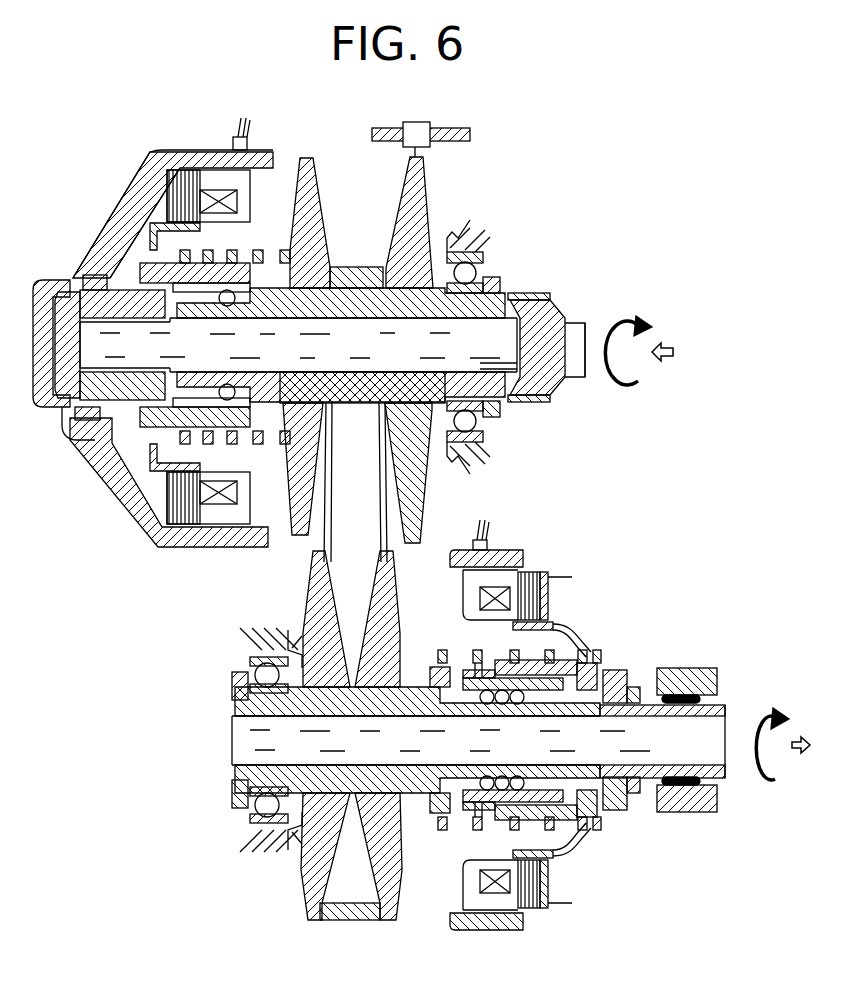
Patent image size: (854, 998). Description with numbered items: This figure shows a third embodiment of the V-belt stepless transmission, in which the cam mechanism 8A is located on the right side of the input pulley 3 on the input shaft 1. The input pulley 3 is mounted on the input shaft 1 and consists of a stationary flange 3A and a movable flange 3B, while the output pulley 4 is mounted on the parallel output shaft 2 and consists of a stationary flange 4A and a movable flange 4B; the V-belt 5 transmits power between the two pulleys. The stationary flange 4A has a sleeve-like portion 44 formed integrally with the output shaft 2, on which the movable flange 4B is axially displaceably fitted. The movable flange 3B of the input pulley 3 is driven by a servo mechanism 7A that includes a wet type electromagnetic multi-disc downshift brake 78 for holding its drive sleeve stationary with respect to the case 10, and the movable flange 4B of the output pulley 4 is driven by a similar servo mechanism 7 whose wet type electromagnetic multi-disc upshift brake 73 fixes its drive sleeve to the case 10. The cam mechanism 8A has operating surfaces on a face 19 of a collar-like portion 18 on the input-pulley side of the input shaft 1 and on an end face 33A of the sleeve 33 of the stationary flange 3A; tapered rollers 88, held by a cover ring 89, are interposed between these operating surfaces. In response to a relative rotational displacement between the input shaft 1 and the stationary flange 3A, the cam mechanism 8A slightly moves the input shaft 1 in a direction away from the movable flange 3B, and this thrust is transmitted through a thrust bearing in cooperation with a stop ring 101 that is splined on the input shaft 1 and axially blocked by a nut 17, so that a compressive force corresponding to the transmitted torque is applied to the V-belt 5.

The input shaft 1 is at (562, 378).
The output shaft 2 is at (726, 708).
The input pulley 3 is at (375, 350).
The stationary flange 3A is at (420, 215).
The movable flange 3B is at (308, 212).
The output pulley 4 is at (336, 742).
The stationary flange 4A is at (300, 868).
The movable flange 4B is at (393, 870).
The V-belt 5 is at (356, 268).
The servo mechanism 7 is at (573, 711).
The servo mechanism 7A is at (155, 207).
The cam mechanism 8A is at (543, 272).
The case 10 is at (497, 550).
The nut 17 is at (66, 300).
The collar-like portion 18 is at (556, 308).
The face 19 is at (552, 320).
The sleeve 33 is at (335, 320).
The end face 33A is at (512, 292).
The sleeve-like portion 44 is at (489, 772).
The upshift brake 73 is at (560, 598).
The downshift brake 78 is at (205, 170).
The tapered rollers 88 is at (498, 353).
The cover ring 89 is at (538, 296).
The stop ring 101 is at (95, 272).